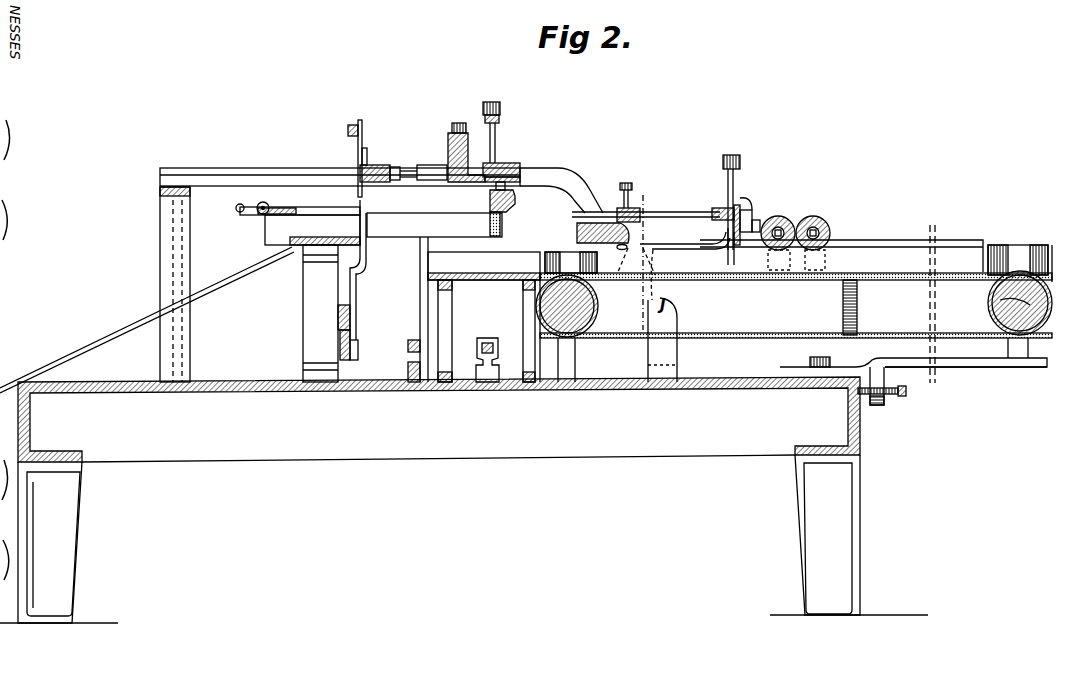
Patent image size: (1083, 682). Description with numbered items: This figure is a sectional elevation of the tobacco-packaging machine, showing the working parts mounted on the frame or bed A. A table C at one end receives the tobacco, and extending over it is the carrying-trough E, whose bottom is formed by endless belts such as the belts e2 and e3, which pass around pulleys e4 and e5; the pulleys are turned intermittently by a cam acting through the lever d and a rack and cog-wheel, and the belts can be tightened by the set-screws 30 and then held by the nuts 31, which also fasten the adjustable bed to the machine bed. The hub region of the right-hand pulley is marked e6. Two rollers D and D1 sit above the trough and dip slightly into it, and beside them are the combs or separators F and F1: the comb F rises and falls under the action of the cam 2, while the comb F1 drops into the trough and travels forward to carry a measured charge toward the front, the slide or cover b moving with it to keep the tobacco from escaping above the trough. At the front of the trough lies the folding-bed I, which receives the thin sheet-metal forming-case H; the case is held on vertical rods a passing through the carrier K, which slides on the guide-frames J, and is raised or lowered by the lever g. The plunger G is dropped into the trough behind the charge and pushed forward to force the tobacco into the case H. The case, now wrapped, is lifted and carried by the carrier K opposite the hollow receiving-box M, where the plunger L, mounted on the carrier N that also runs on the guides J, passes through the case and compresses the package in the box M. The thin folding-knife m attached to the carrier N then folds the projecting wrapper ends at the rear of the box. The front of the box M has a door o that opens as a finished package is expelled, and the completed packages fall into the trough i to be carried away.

The frame or bed A is at (464, 500).
The guide-frames J is at (381, 182).
The folding-knife m is at (353, 160).
The carrier N is at (380, 172).
The carrying-trough E is at (682, 218).
The carrier K is at (484, 152).
The lever g is at (502, 108).
The vertical rod a is at (486, 143).
The plunger L is at (489, 204).
The receiving-box M is at (300, 226).
The door o is at (241, 212).
The trough i is at (212, 283).
The forming-case H is at (434, 297).
The folding-bed I is at (484, 317).
The plunger G is at (640, 213).
The table C is at (599, 237).
The lever d is at (618, 250).
The cam 2 is at (636, 261).
The slide or cover b is at (685, 243).
The comb or separator F is at (737, 262).
The comb or separator F1 is at (721, 250).
The endless belt e2 is at (796, 313).
The endless belt e3 is at (858, 297).
The pulley e4 is at (796, 251).
The pulley e5 is at (992, 303).
The roller hub e6 is at (804, 295).
The roller D is at (813, 226).
The roller D1 is at (778, 226).
The nut 31 is at (913, 353).
The set-screw 30 is at (925, 395).